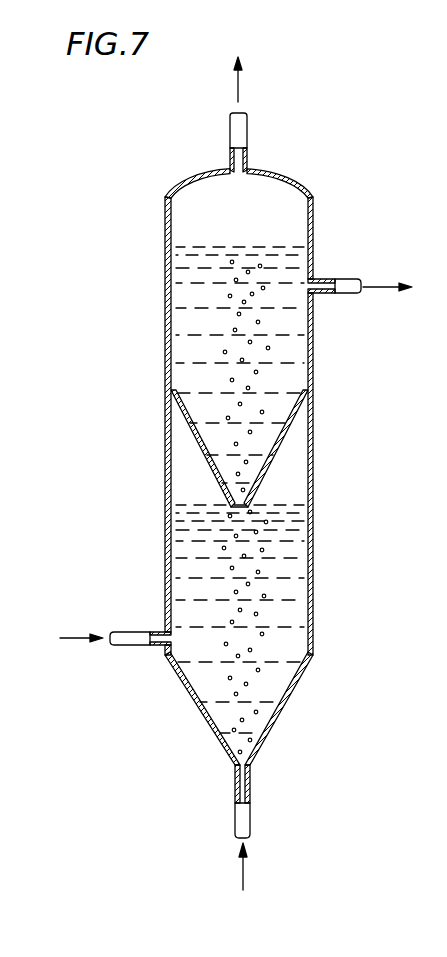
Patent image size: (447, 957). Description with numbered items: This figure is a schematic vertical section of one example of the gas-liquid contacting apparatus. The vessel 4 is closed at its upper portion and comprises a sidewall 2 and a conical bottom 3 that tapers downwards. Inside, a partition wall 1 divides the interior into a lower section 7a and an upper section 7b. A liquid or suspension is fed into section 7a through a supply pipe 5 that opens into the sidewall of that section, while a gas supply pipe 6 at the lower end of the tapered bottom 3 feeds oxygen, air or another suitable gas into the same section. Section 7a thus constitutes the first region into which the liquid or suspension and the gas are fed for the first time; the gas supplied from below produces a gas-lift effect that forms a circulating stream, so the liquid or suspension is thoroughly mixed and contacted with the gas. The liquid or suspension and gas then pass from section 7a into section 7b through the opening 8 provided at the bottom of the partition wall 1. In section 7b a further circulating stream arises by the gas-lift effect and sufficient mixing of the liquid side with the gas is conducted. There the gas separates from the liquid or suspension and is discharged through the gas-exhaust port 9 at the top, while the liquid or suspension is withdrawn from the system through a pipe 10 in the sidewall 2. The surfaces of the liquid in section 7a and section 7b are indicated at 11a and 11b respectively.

The partition wall 1 is at (282, 450).
The sidewall 2 is at (313, 343).
The conical bottom 3 is at (290, 706).
The vessel 4 is at (165, 220).
The supply pipe 5 is at (128, 638).
The gas supply pipe 6 is at (236, 822).
The section 7a is at (185, 567).
The section 7b is at (180, 355).
The opening 8 is at (250, 507).
The gas-exhaust port 9 is at (238, 130).
The pipe 10 is at (345, 280).
The surface of the liquid 11a is at (190, 508).
The surface of the liquid 11b is at (195, 250).